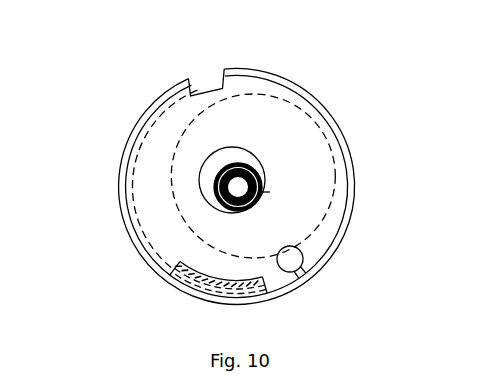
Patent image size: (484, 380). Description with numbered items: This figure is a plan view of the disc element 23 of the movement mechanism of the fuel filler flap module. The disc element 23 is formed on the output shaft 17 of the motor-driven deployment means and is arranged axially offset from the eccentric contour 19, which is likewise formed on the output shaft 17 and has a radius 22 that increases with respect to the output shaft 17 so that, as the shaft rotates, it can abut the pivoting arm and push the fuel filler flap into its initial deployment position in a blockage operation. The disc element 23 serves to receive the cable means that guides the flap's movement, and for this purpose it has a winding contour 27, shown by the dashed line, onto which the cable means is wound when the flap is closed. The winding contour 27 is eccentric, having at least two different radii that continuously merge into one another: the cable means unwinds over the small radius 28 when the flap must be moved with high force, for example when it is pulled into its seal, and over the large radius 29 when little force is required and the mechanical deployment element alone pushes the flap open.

The output shaft 17 is at (258, 197).
The eccentric contour 19 is at (266, 161).
The radius 22 is at (220, 148).
The disc element 23 is at (128, 140).
The winding contour 27 is at (182, 218).
The small radius 28 is at (172, 185).
The large radius 29 is at (325, 140).